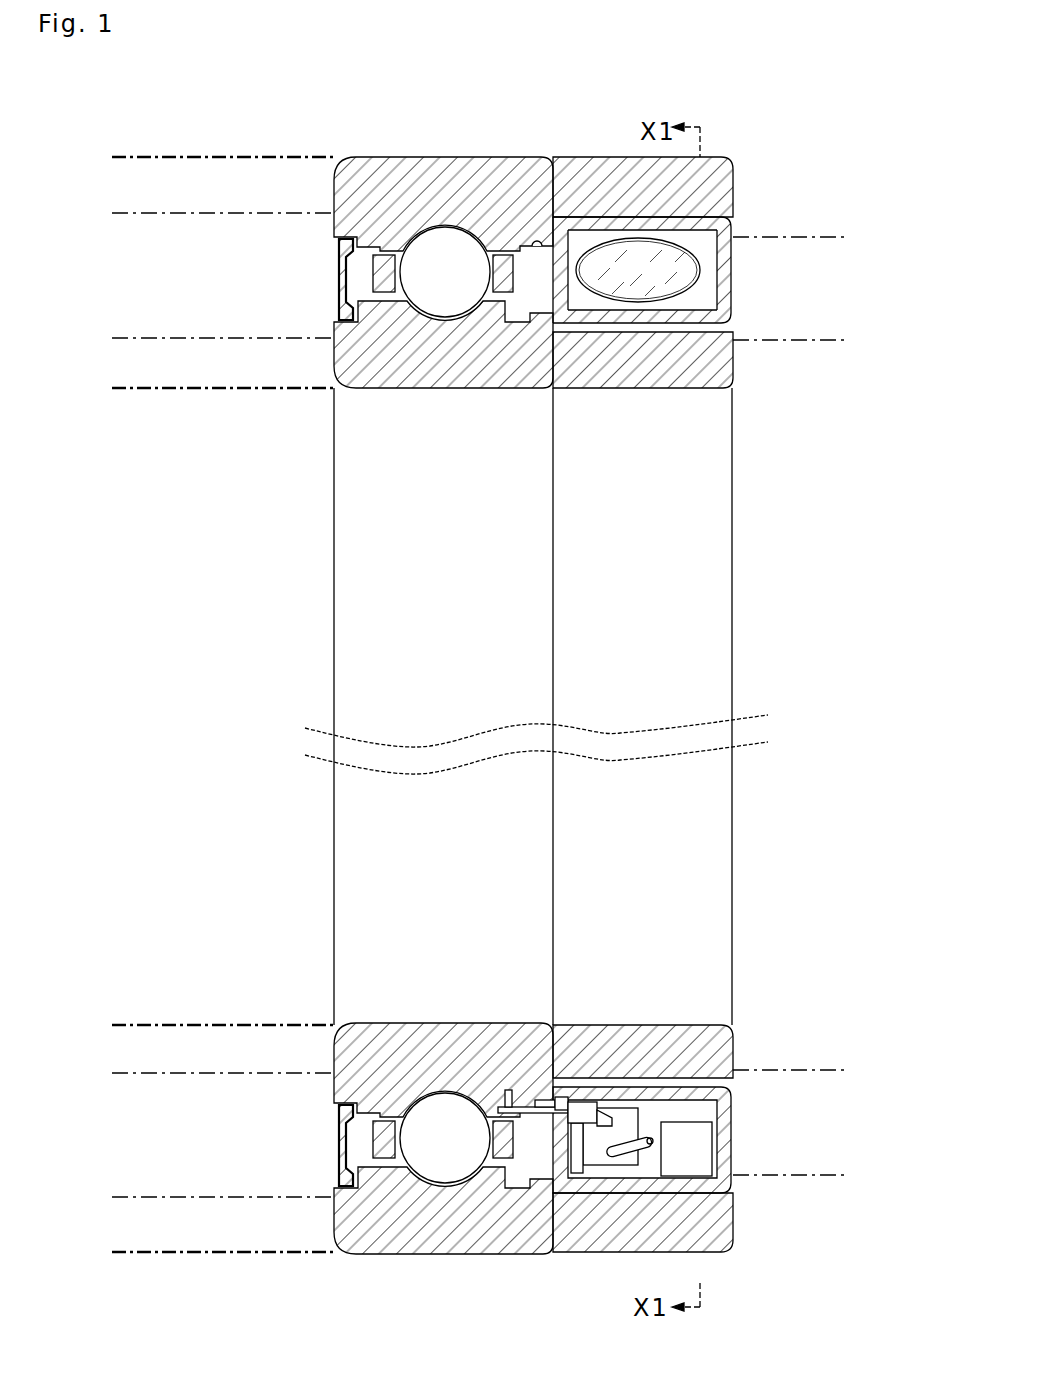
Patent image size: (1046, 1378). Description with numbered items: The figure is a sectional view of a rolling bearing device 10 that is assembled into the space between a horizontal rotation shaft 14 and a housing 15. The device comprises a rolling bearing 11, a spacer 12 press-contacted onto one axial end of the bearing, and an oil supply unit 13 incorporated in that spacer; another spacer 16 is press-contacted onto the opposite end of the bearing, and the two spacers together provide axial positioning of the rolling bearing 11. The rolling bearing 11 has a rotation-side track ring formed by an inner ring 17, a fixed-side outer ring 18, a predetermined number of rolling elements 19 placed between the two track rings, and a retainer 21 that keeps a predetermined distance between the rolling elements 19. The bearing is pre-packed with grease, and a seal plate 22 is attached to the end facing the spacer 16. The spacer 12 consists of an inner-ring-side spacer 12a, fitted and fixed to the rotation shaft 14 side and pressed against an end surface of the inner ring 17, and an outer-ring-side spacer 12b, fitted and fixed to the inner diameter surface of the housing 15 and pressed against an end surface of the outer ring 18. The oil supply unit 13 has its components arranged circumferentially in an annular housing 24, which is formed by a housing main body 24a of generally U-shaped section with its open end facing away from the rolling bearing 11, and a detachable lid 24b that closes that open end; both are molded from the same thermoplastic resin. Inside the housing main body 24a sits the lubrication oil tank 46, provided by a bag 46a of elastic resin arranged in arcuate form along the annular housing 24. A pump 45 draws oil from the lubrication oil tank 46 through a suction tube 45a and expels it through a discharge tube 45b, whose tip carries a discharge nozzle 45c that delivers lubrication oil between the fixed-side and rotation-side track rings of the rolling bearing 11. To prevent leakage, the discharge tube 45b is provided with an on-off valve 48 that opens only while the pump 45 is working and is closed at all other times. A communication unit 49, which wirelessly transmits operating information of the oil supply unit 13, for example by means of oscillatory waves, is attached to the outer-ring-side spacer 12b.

The rolling bearing device 10 is at (540, 152).
The rolling bearing 11 is at (405, 152).
The spacer 12 is at (612, 152).
The inner-ring-side spacer 12a is at (580, 355).
The outer-ring-side spacer 12b is at (585, 175).
The oil supply unit 13 is at (742, 233).
The rotation shaft 14 is at (212, 413).
The housing 15 is at (272, 143).
The spacer 16 is at (288, 358).
The inner ring 17 is at (468, 365).
The outer ring 18 is at (470, 170).
The rolling elements 19 is at (430, 245).
The retainer 21 is at (388, 290).
The seal plate 22 is at (333, 297).
The annular housing 24 is at (641, 330).
The housing main body 24a is at (680, 340).
The lid 24b is at (718, 298).
The pump 45 is at (650, 1114).
The suction tube 45a is at (640, 1148).
The discharge tube 45b is at (607, 1142).
The discharge nozzle 45c is at (520, 1110).
The lubrication oil tank 46 is at (710, 260).
The bag 46a is at (700, 287).
The on-off valve 48 is at (577, 1110).
The communication unit 49 is at (692, 1158).